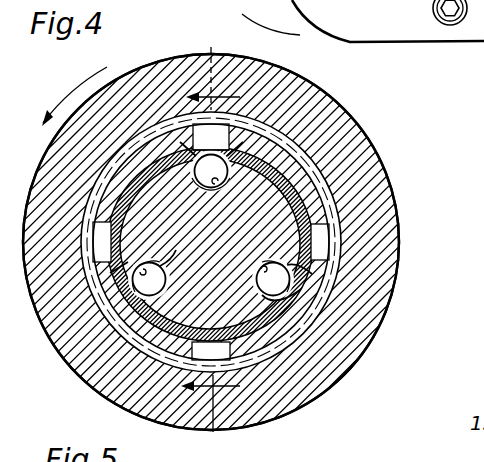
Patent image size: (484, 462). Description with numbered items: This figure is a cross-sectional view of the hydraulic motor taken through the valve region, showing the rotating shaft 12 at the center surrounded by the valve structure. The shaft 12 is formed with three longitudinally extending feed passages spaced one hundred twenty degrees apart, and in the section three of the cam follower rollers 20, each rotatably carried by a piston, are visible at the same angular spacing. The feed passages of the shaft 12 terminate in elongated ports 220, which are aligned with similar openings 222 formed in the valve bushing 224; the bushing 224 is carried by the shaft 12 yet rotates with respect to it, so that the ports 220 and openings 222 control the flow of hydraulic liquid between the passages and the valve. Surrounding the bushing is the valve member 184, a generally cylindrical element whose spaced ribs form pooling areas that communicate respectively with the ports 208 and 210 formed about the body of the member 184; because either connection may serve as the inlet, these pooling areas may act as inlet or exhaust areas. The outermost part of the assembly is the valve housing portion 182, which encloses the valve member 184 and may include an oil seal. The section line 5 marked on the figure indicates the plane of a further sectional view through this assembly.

The section line 5- 5 is at (141, 240).
The rotating shaft 12 is at (232, 293).
The cam follower roller 20 is at (258, 266).
The valve housing portion 182 is at (341, 131).
The valve member 184 is at (327, 180).
The port 208 is at (272, 87).
The port 210 is at (303, 150).
The elongated port 220 is at (197, 171).
The opening 222 is at (197, 126).
The valve bushing 224 is at (313, 243).